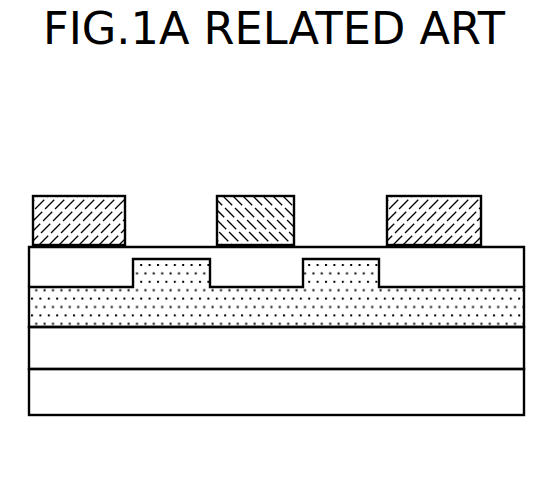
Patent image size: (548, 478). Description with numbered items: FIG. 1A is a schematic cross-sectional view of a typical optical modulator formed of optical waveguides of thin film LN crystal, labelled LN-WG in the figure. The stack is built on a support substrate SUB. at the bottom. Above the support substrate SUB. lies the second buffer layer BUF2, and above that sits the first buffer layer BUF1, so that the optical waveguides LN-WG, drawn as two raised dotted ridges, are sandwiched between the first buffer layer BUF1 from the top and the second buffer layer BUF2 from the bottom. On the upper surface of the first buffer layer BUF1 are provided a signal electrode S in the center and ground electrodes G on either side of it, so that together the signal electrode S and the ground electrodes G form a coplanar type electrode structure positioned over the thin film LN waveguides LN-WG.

The ground electrode G is at (261, 220).
The signal electrode S is at (257, 220).
The first buffer layer BUF1 is at (276, 267).
The second buffer layer BUF2 is at (276, 348).
The support substrate SUB. is at (276, 392).
The optical waveguide of thin film LN crystal LN-WG is at (276, 358).